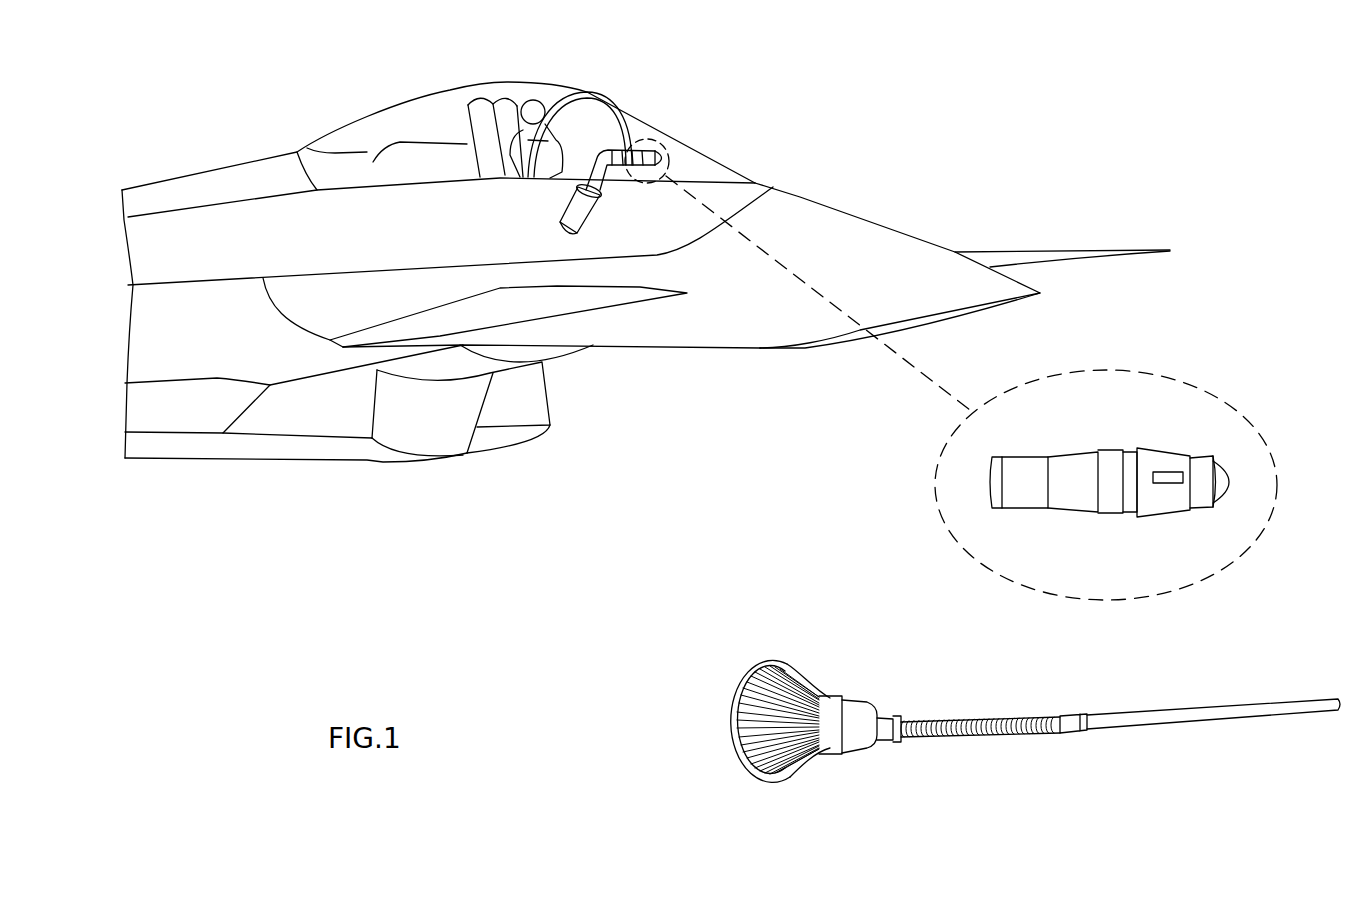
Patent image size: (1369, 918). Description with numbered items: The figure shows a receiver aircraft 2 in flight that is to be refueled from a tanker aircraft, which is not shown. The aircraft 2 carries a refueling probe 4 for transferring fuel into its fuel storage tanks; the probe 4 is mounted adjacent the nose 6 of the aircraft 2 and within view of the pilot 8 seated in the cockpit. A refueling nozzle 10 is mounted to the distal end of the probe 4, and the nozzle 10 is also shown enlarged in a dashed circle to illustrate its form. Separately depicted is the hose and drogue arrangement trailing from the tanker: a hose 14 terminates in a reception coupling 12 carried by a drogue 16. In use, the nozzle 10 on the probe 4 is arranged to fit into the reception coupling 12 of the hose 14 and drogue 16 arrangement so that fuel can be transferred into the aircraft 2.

The aircraft 2 is at (232, 148).
The refueling probe 4 is at (588, 173).
The nose 6 is at (848, 218).
The pilot 8 is at (535, 100).
The refueling nozzle 10 is at (671, 148).
The reception coupling 12 is at (845, 697).
The hose 14 is at (1132, 720).
The drogue 16 is at (733, 709).